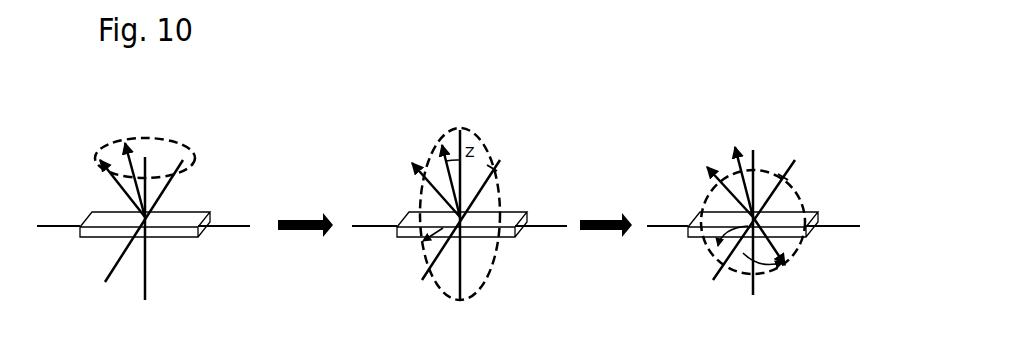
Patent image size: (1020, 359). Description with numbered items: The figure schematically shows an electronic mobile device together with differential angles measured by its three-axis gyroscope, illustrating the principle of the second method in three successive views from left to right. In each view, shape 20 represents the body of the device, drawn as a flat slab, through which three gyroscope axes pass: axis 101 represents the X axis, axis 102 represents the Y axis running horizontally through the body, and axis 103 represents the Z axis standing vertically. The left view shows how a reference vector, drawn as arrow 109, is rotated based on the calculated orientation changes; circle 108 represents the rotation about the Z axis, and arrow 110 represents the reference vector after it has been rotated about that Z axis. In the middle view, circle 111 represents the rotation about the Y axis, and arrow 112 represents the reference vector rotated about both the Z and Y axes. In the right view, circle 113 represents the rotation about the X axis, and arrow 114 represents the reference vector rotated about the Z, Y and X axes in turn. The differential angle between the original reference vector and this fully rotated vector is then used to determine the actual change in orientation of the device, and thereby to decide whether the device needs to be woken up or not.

The body of the device 20 is at (180, 211).
The X axis 101 is at (110, 277).
The Y axis 102 is at (223, 225).
The Z axis 103 is at (147, 285).
The rotation about the Z axis 108 is at (195, 160).
The reference vector 109 is at (101, 168).
The reference vector rotated about the Z axis 110 is at (150, 152).
The rotation about the Y axis 111 is at (500, 188).
The reference vector rotated about the Z and Y axes 112 is at (423, 240).
The rotation about the X axis 113 is at (795, 185).
The reference vector rotated about the Z, Y and X axes 114 is at (740, 257).